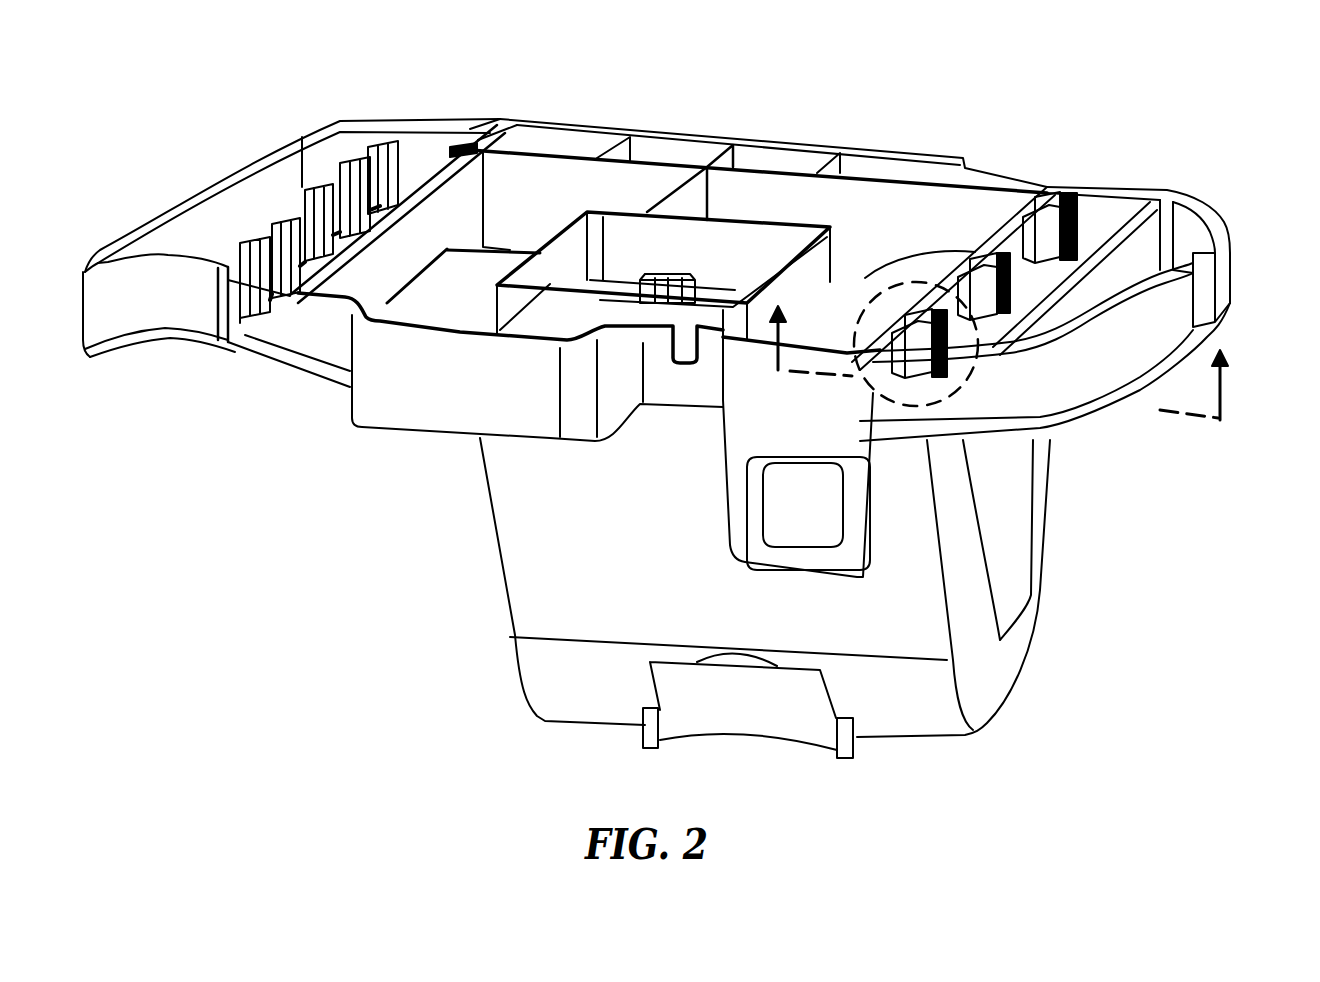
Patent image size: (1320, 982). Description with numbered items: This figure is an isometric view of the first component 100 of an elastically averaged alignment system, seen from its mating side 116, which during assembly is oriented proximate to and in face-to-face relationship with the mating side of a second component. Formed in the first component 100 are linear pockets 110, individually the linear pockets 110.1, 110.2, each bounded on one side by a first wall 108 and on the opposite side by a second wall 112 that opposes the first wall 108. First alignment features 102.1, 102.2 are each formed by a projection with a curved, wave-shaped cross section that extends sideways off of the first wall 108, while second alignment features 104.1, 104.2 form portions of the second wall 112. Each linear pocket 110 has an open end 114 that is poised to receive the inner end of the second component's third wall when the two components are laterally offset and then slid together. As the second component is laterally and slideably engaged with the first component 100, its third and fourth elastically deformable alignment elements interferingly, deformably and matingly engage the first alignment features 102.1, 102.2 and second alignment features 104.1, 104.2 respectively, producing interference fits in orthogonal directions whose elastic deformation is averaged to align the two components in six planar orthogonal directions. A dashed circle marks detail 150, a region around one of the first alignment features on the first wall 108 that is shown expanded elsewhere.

The first component 100 is at (687, 397).
The first alignment feature 102.1 is at (424, 175).
The first alignment feature 102.2 is at (1043, 193).
The second alignment feature 104.1 is at (396, 177).
The second alignment feature 104.2 is at (1110, 225).
The first wall 108 is at (1004, 226).
The linear pocket 110 is at (475, 428).
The linear pocket 110.1 is at (275, 329).
The linear pocket 110.2 is at (867, 407).
The second wall 112 is at (1147, 263).
The open end 114 is at (243, 323).
The mating side 116 is at (572, 167).
The detail 150 is at (963, 380).